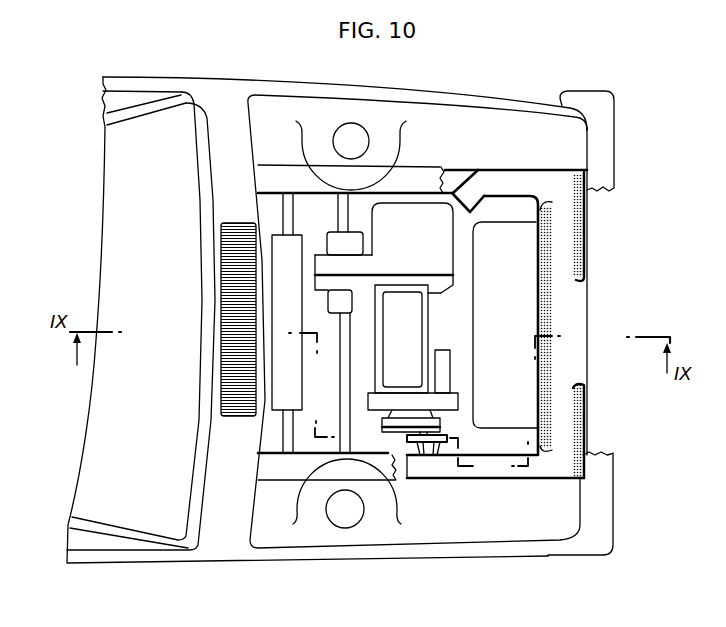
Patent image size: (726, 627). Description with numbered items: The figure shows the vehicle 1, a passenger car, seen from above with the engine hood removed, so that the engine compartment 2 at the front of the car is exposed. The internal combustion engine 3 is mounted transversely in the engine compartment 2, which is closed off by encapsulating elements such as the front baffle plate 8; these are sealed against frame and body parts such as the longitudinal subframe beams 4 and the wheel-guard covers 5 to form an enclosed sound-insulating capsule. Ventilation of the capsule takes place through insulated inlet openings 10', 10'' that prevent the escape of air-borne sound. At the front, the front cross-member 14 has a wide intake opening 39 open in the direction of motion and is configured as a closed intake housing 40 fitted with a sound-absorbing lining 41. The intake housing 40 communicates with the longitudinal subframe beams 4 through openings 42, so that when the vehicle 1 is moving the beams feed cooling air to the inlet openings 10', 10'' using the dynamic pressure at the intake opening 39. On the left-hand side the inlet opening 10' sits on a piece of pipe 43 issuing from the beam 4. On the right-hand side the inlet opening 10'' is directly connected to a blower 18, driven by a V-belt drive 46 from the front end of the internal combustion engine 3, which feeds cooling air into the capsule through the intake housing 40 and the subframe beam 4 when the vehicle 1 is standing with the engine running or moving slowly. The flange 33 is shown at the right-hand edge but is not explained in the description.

The vehicle 1 is at (163, 75).
The engine compartment 2 is at (322, 387).
The internal combustion engine 3 is at (405, 322).
The longitudinal subframe beam 4 is at (419, 185).
The wheel-guard cover 5 is at (493, 133).
The front baffle plate 8 is at (474, 306).
The inlet opening 10' is at (384, 323).
The inlet opening 10'' is at (395, 442).
The front cross-member 14 is at (592, 217).
The blower 18 is at (441, 440).
The flange 33 is at (602, 149).
The intake opening 39 is at (588, 295).
The intake housing 40 is at (560, 393).
The sound-absorbing lining 41 is at (550, 251).
The opening 42 is at (559, 188).
The piece of pipe 43 is at (471, 187).
The V-belt drive 46 is at (400, 428).